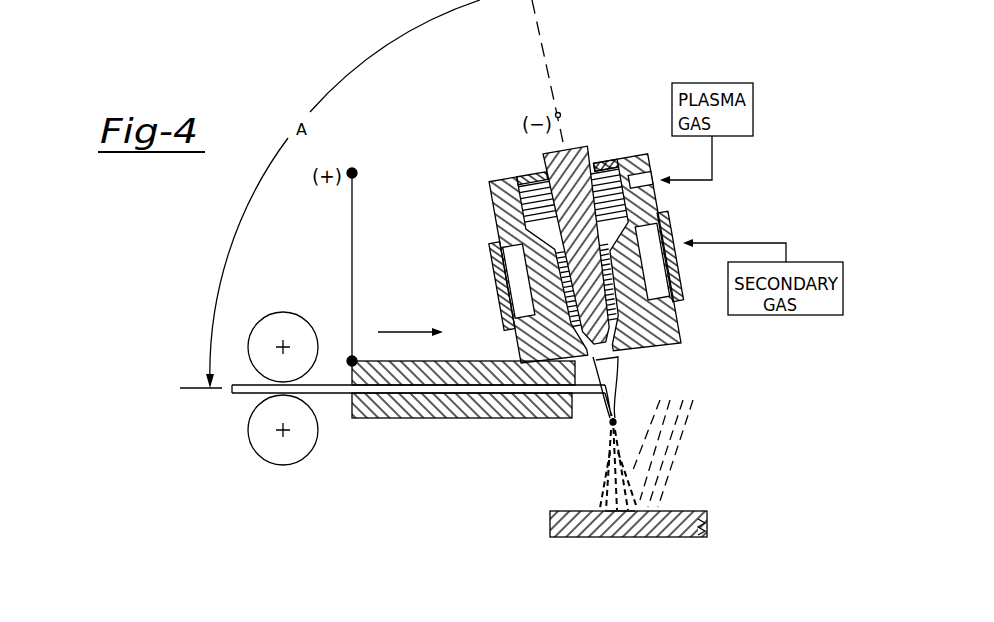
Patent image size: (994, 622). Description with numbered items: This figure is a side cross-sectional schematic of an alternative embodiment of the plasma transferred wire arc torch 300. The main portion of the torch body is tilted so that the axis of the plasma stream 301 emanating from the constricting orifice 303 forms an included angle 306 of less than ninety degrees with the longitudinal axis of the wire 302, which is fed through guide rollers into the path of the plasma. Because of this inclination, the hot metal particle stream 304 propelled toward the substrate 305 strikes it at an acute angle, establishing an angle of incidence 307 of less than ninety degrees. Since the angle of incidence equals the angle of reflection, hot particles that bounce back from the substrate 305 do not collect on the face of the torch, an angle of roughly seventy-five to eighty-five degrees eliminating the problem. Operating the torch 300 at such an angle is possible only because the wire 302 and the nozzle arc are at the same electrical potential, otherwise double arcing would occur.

The plasma transferred wire arc torch 300 is at (466, 283).
The plasma stream 301 is at (615, 385).
The wire 302 is at (592, 397).
The constricting orifice 303 is at (621, 371).
The hot metal particle stream 304 is at (618, 517).
The substrate 305 is at (698, 524).
The included angle 306 is at (580, 505).
The angle of incidence 307 is at (698, 403).